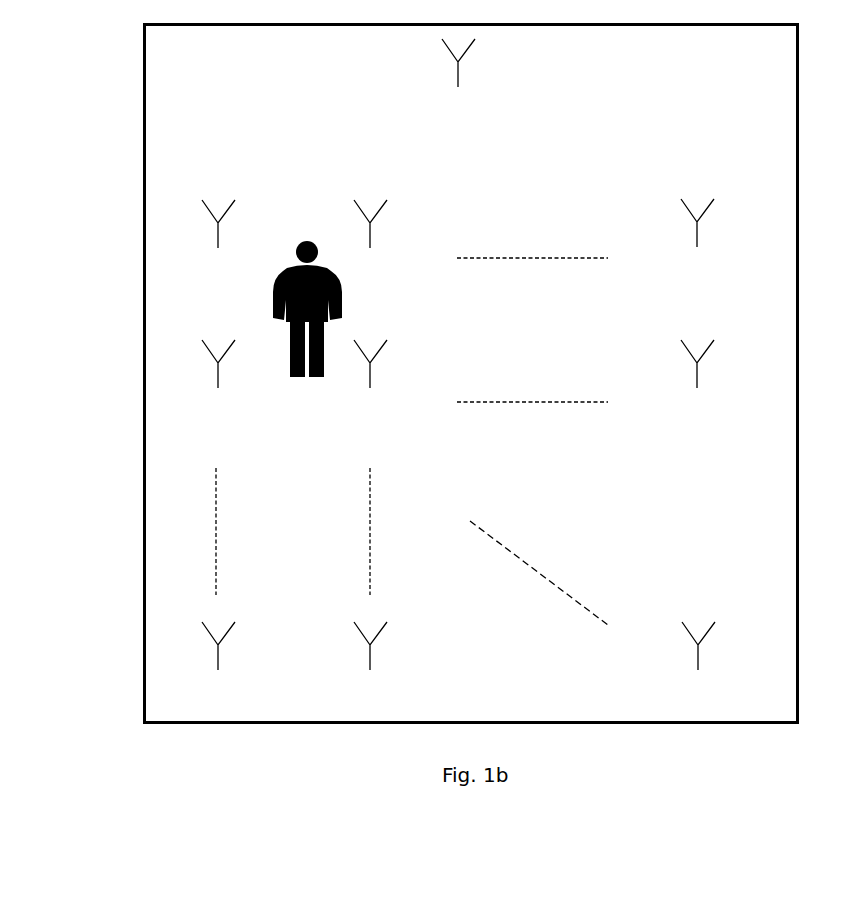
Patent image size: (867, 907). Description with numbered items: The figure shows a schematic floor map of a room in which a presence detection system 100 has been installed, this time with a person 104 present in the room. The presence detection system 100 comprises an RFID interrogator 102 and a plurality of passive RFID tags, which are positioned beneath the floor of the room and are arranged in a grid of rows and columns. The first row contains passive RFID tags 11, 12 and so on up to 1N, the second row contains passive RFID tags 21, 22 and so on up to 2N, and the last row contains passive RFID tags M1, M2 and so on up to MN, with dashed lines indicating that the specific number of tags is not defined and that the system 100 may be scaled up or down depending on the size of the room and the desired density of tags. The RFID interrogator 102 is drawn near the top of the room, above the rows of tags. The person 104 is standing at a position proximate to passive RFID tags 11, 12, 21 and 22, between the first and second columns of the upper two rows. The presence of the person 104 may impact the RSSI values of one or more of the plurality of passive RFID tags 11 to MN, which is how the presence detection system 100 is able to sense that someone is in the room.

The presence detection system 100 is at (117, 103).
The RFID interrogator 102 is at (457, 80).
The person 104 is at (307, 237).
The passive RFID tag 11 is at (218, 236).
The passive RFID tag 12 is at (370, 236).
The passive RFID tag 1N is at (697, 235).
The passive RFID tag 21 is at (218, 376).
The passive RFID tag 22 is at (370, 376).
The passive RFID tag 2N is at (697, 376).
The passive RFID tag M1 is at (218, 659).
The passive RFID tag M2 is at (370, 659).
The passive RFID tag MN is at (698, 659).